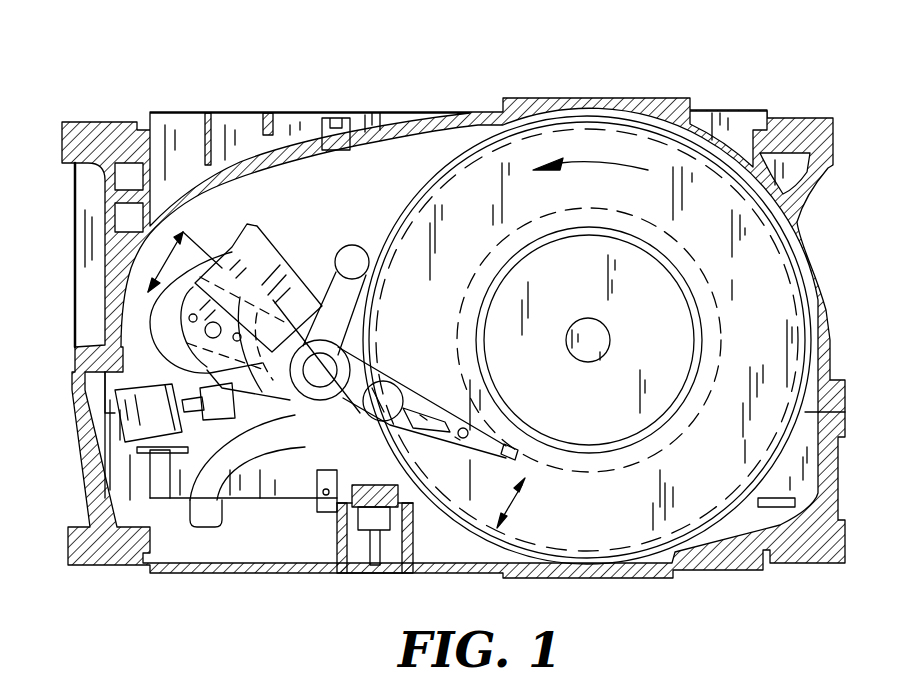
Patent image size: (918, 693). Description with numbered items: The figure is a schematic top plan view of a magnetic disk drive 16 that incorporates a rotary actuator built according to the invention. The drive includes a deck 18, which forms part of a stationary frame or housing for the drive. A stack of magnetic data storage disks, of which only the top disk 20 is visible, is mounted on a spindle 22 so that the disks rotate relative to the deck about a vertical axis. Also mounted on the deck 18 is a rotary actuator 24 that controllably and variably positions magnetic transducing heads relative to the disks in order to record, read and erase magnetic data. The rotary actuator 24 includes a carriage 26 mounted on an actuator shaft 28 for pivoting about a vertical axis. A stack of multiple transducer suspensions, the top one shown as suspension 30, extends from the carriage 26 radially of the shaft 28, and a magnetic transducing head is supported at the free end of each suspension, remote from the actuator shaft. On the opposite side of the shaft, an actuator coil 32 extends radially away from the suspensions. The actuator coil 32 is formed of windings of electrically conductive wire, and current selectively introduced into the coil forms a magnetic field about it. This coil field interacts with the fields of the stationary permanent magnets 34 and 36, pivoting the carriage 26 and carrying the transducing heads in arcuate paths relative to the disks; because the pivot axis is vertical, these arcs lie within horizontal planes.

The magnetic disk drive 16 is at (342, 84).
The deck 18 is at (98, 135).
The magnetic data storage disk 20 is at (763, 273).
The spindle 22 is at (592, 348).
The rotary actuator 24 is at (308, 297).
The carriage 26 is at (315, 396).
The actuator shaft 28 is at (364, 354).
The transducer suspension 30 is at (433, 437).
The actuator coil 32 is at (157, 325).
The permanent magnet 34 is at (258, 245).
The permanent magnet 36 is at (143, 378).